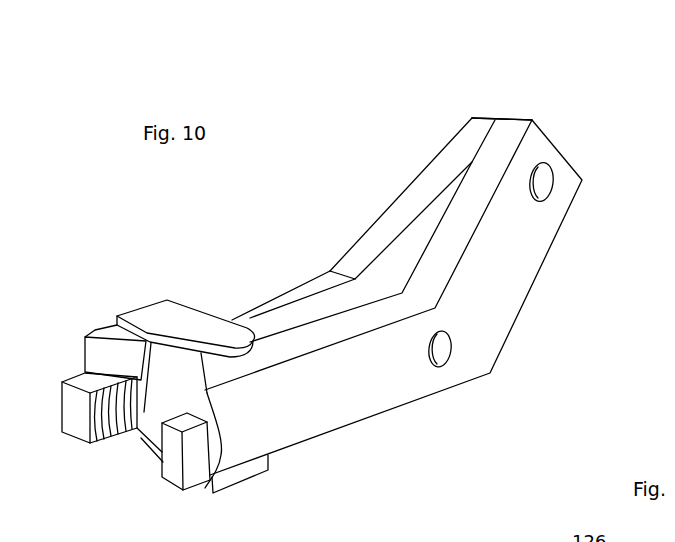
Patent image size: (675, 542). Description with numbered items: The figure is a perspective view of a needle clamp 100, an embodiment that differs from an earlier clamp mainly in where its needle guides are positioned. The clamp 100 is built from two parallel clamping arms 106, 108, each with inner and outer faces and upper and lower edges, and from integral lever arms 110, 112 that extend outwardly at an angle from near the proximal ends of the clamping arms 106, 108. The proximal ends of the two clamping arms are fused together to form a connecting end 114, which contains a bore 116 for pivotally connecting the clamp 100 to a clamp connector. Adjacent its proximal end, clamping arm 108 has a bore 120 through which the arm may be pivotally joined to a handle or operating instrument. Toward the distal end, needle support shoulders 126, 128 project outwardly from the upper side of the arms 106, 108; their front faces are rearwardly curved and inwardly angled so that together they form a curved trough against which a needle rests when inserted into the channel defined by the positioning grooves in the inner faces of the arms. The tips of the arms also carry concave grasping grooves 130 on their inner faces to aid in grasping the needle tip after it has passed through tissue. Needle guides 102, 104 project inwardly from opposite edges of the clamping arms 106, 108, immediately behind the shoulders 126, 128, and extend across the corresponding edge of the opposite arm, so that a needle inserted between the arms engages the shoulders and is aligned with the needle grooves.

The needle clamp 100 is at (422, 152).
The needle guide 102 is at (185, 318).
The needle guide 104 is at (242, 473).
The clamping arm 106 is at (255, 302).
The clamping arm 108 is at (337, 413).
The lever arm 110 is at (387, 228).
The lever arm 112 is at (507, 300).
The connecting end 114 is at (512, 130).
The bore 116 is at (547, 172).
The bore 120 is at (443, 358).
The needle support shoulder 126 is at (107, 352).
The needle support shoulder 128 is at (205, 485).
The concave grasping groove 130 is at (102, 437).